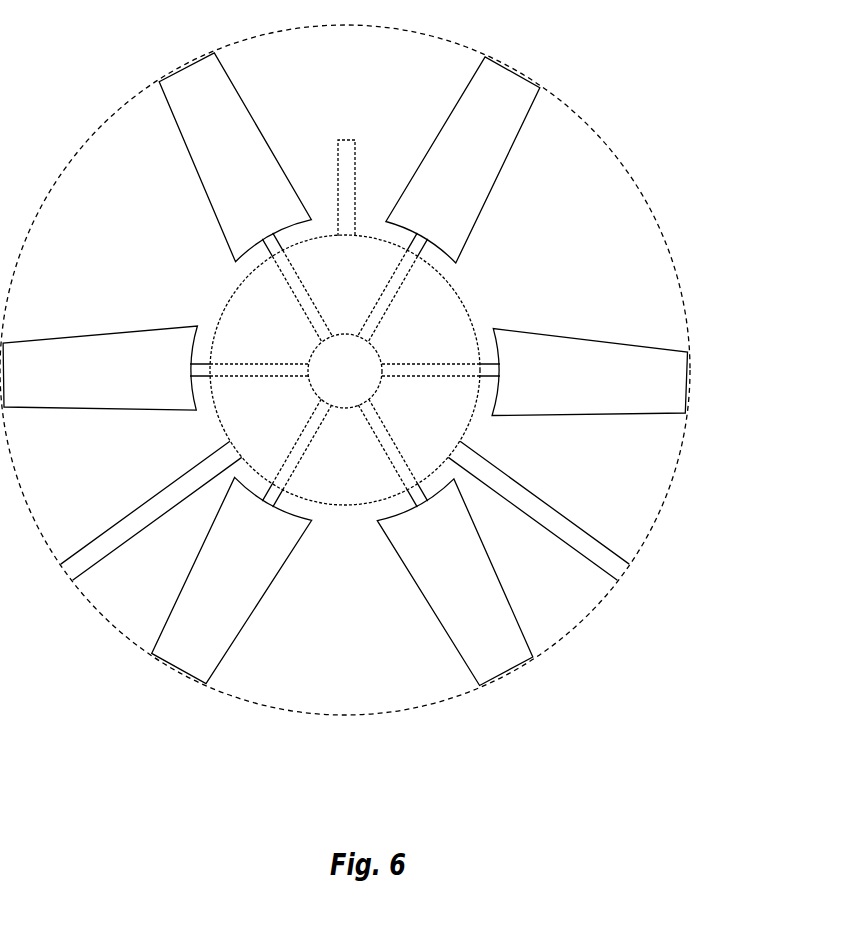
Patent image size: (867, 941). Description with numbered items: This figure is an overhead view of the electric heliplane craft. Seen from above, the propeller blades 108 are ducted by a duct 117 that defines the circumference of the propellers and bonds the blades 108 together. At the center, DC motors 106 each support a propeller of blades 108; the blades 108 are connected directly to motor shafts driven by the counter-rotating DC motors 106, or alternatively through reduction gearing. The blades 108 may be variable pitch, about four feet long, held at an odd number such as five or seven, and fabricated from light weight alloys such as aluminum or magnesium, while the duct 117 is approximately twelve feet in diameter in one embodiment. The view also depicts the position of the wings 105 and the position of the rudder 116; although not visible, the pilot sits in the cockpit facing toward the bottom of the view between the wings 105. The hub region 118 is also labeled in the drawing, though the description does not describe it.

The impeller arm 105 is at (155, 490).
The central bore 106 is at (308, 350).
The blade 108 is at (518, 133).
The key 116 is at (345, 140).
The outer housing 117 is at (660, 240).
The hub 118 is at (460, 305).